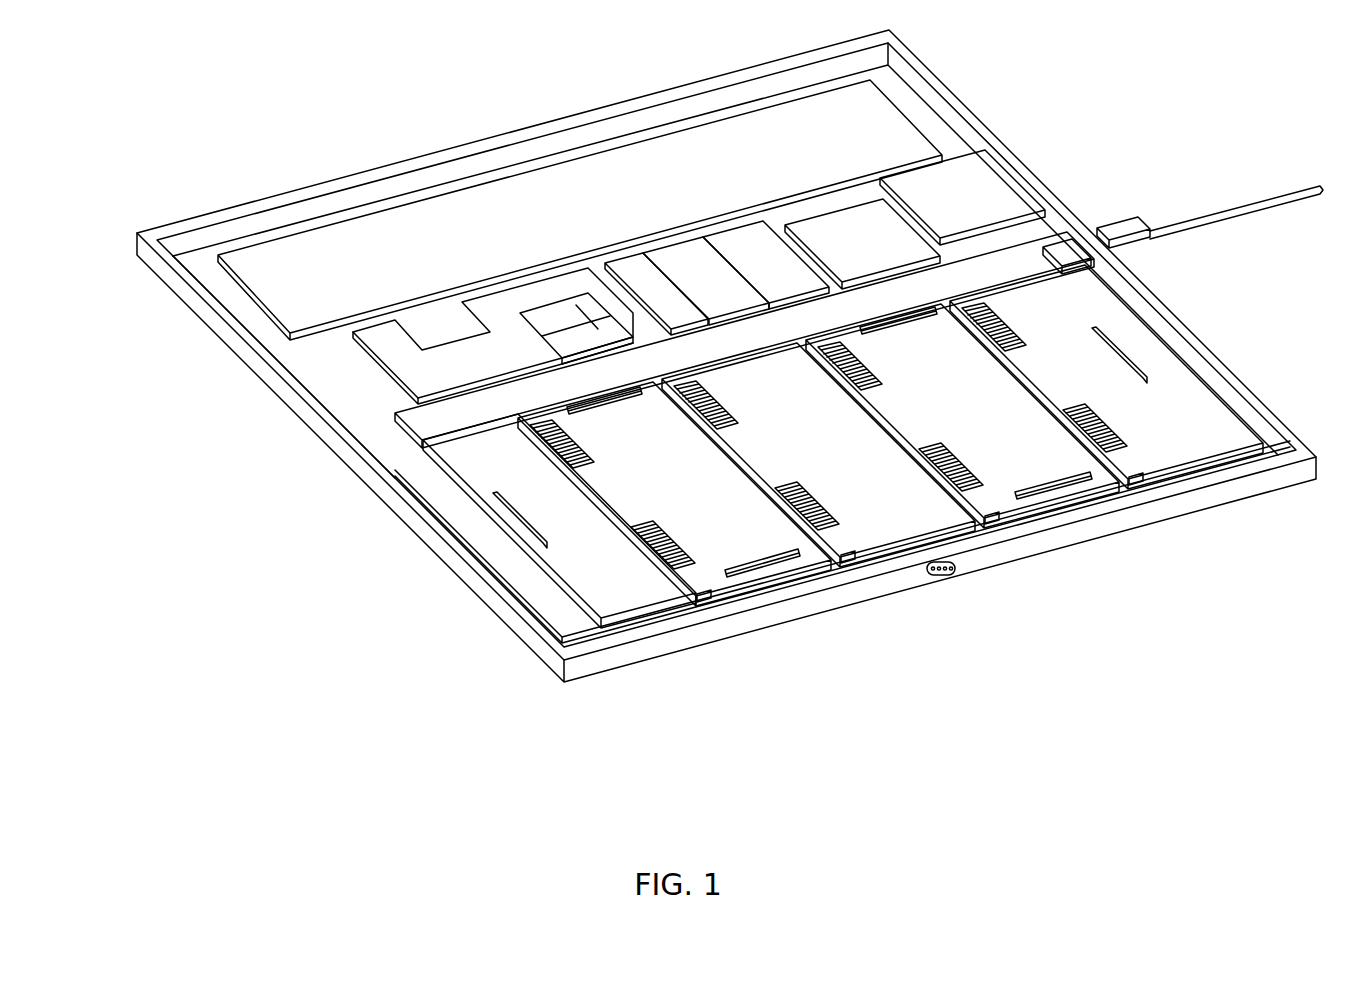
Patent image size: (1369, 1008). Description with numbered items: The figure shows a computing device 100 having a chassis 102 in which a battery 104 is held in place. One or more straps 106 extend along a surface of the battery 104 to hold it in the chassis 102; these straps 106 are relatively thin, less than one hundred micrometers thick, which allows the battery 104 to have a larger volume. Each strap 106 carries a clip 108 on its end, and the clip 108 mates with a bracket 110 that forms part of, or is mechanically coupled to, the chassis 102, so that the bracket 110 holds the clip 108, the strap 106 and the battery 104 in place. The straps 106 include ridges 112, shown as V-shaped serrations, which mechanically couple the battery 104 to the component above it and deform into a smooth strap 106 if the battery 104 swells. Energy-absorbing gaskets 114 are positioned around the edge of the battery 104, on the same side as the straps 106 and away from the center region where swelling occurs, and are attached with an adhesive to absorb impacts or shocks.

The computing device 100 is at (96, 136).
The chassis 102 is at (440, 552).
The battery 104 is at (610, 592).
The strap 106 is at (1035, 355).
The clip 108 is at (710, 595).
The bracket 110 is at (812, 570).
The ridge 112 is at (530, 452).
The energy-absorbing gasket 114 is at (1125, 350).